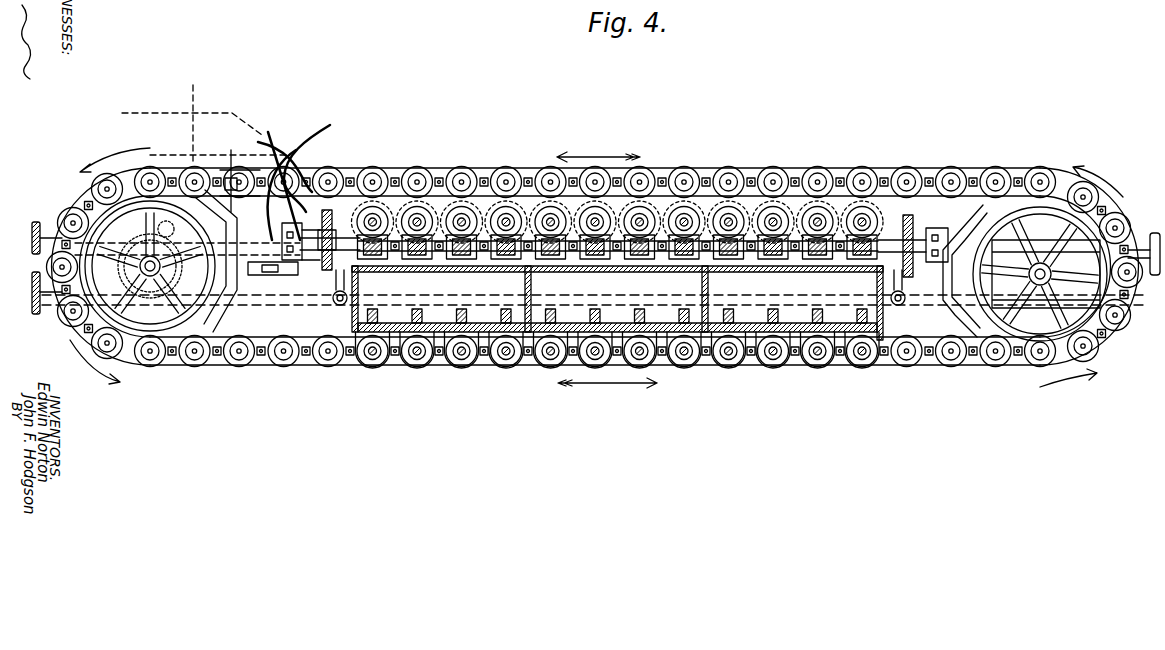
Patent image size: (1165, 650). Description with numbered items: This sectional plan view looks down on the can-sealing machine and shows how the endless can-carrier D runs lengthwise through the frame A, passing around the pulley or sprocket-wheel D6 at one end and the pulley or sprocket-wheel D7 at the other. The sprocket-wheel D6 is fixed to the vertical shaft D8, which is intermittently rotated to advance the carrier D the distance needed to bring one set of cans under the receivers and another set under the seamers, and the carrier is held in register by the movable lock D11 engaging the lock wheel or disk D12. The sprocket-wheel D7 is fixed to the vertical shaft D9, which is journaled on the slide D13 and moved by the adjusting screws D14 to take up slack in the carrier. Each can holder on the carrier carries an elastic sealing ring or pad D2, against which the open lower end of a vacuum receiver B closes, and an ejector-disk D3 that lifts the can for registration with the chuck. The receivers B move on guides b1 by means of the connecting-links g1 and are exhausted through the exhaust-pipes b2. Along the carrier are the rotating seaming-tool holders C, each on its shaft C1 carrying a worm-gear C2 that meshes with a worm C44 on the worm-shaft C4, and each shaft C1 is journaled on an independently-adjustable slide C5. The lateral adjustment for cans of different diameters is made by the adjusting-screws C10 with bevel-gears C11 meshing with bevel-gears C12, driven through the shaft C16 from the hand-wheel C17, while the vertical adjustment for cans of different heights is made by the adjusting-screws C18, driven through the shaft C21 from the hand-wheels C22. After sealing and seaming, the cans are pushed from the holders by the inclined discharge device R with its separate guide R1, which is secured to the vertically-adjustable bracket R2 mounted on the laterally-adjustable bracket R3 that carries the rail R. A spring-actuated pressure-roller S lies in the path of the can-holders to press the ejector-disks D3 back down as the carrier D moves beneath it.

The frame A is at (537, 280).
The vacuum chambers or receivers B is at (543, 368).
The guides b1 is at (483, 334).
The exhaust-pipes b2 is at (445, 356).
The seaming-tool holders C is at (430, 215).
The shaft of tool-holder C1 is at (420, 210).
The worm-gear C2 is at (465, 218).
The worm-shaft C4 is at (622, 254).
The independently-adjustable slide C5 is at (427, 253).
The worm C44 is at (462, 244).
The adjusting-screws C10 is at (323, 282).
The bevel-gears C11 is at (355, 280).
The bevel-gears C12 is at (336, 304).
The shaft C16 is at (640, 296).
The hand-wheel C17 is at (32, 285).
The adjusting-screws C18 is at (923, 240).
The shaft C21 is at (206, 119).
The hand-wheels C22 is at (42, 210).
The can-carrier D is at (350, 170).
The sealing ring or pad D2 is at (928, 172).
The ejector-disk D3 is at (910, 183).
The pulley or sprocket-wheel D6 is at (207, 316).
The pulley or sprocket-wheel D7 is at (975, 312).
The vertical shaft D8 is at (150, 272).
The vertical shaft D9 is at (1038, 282).
The movable lock D11 is at (272, 276).
The lock wheel or disk D12 is at (226, 312).
The slide D13 is at (1094, 259).
The adjusting screws D14 is at (1100, 345).
The connecting-links g1 is at (420, 316).
The discharge device R is at (270, 170).
The guide R1 is at (272, 146).
The vertically-adjustable bracket R2 is at (318, 153).
The laterally-adjustable bracket R3 is at (350, 165).
The pressure-roller S is at (231, 168).